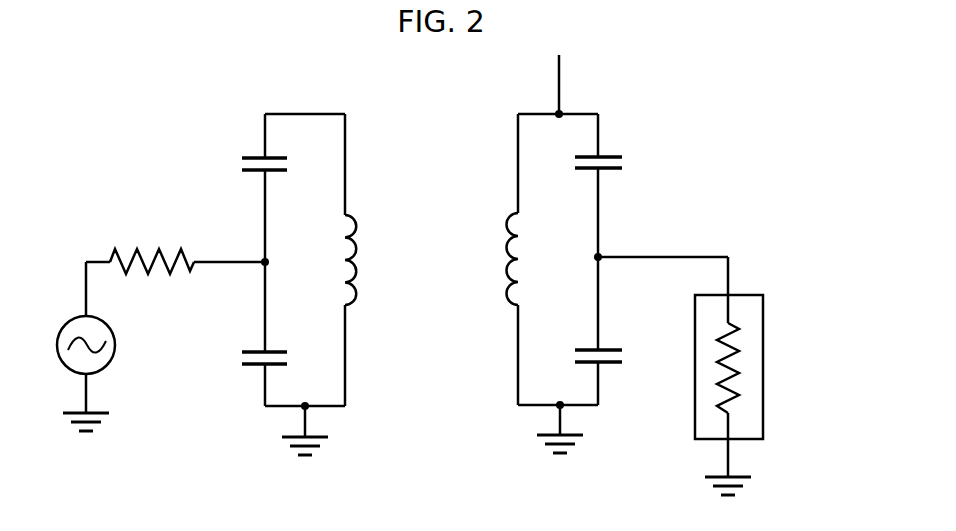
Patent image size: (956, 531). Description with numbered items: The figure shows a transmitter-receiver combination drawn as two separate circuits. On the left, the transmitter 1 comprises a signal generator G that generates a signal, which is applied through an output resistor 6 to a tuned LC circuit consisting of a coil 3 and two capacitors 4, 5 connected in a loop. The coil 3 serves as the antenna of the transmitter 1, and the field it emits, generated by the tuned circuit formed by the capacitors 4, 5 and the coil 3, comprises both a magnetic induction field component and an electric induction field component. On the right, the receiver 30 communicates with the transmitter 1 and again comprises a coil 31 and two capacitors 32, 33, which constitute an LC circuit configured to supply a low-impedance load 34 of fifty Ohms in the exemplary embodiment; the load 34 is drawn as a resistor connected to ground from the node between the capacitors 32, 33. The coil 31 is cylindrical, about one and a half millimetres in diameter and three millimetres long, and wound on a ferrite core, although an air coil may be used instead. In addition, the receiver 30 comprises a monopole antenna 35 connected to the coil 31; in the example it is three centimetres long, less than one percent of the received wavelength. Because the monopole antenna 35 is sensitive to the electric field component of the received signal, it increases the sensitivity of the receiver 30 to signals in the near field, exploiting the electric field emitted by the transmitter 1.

The transmitter 1 is at (104, 130).
The coil 3 is at (360, 250).
The capacitor 4 is at (250, 158).
The capacitor 5 is at (250, 366).
The output resistor 6 is at (160, 248).
The signal generator G is at (113, 348).
The receiver 30 is at (746, 128).
The coil 31 is at (508, 250).
The capacitor 32 is at (618, 156).
The capacitor 33 is at (615, 364).
The low-impedance load 34 is at (764, 368).
The monopole antenna 35 is at (562, 83).